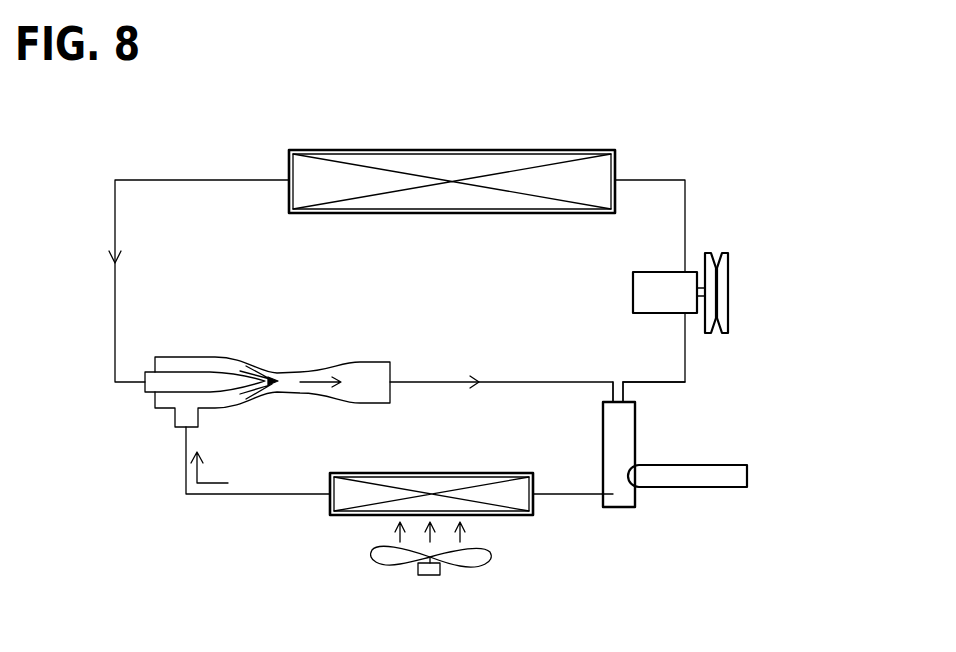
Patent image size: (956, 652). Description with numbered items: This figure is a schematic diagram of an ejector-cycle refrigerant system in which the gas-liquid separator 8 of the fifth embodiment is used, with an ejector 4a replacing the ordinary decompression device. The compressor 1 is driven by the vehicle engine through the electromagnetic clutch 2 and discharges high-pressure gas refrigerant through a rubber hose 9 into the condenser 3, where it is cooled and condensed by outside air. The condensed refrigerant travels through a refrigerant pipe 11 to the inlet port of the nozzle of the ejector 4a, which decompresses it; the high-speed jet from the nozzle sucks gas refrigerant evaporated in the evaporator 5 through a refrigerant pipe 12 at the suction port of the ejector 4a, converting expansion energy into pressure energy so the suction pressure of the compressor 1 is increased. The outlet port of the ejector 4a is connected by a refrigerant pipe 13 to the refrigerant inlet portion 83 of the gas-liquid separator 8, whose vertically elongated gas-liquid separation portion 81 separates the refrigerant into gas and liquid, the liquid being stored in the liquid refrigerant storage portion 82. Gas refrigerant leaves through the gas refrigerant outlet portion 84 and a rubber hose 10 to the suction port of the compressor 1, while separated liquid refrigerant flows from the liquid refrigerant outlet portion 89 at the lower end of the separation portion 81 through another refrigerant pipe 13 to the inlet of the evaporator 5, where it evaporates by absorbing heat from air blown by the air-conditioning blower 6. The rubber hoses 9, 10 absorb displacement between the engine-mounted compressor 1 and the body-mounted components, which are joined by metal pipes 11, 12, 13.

The compressor 1 is at (647, 272).
The electromagnetic clutch 2 is at (728, 262).
The condenser 3 is at (432, 150).
The ejector 4a is at (310, 368).
The evaporator 5 is at (340, 515).
The air-conditioning blower 6 is at (477, 558).
The gas-liquid separator 8 is at (655, 459).
The rubber hose 9 is at (635, 180).
The rubber hose 10 is at (685, 353).
The refrigerant pipe 11 is at (197, 180).
The refrigerant pipe 12 is at (250, 494).
The refrigerant pipe 13 is at (512, 382).
The gas-liquid separation portion 81 is at (620, 507).
The liquid refrigerant storage portion 82 is at (692, 487).
The refrigerant inlet portion 83 is at (593, 382).
The gas refrigerant outlet portion 84 is at (645, 384).
The liquid refrigerant outlet portion 89 is at (600, 507).